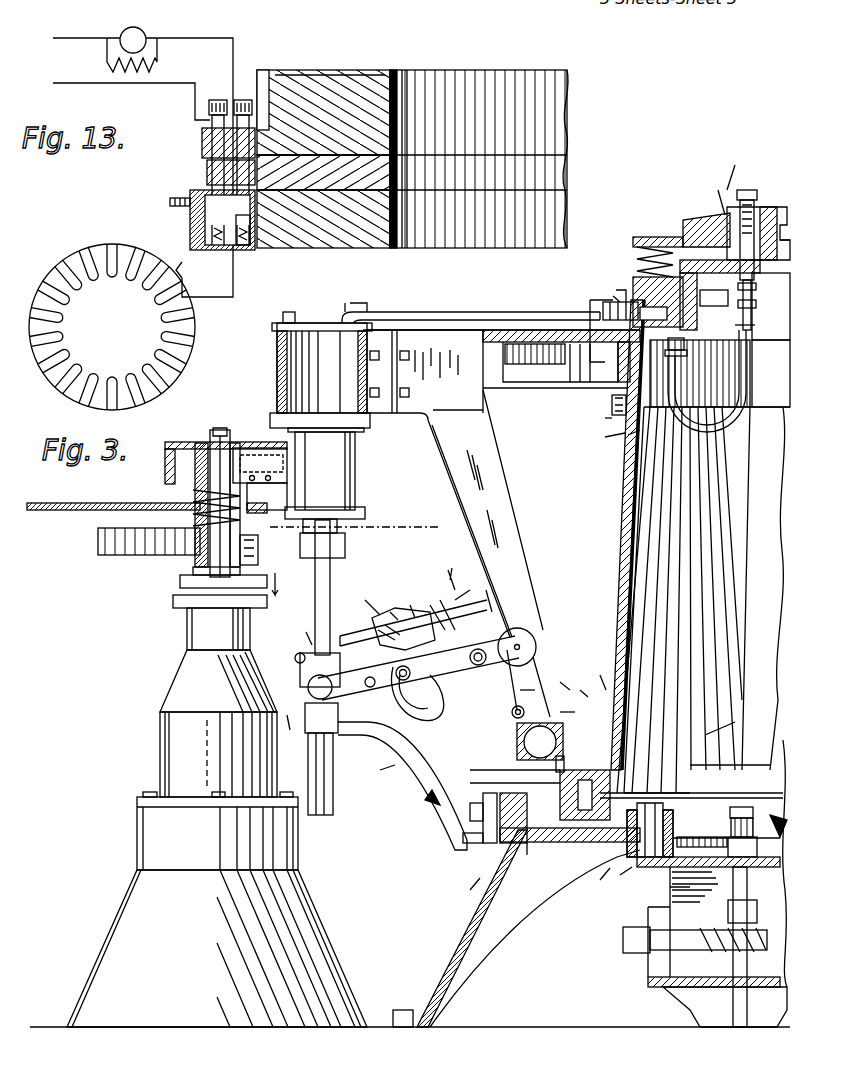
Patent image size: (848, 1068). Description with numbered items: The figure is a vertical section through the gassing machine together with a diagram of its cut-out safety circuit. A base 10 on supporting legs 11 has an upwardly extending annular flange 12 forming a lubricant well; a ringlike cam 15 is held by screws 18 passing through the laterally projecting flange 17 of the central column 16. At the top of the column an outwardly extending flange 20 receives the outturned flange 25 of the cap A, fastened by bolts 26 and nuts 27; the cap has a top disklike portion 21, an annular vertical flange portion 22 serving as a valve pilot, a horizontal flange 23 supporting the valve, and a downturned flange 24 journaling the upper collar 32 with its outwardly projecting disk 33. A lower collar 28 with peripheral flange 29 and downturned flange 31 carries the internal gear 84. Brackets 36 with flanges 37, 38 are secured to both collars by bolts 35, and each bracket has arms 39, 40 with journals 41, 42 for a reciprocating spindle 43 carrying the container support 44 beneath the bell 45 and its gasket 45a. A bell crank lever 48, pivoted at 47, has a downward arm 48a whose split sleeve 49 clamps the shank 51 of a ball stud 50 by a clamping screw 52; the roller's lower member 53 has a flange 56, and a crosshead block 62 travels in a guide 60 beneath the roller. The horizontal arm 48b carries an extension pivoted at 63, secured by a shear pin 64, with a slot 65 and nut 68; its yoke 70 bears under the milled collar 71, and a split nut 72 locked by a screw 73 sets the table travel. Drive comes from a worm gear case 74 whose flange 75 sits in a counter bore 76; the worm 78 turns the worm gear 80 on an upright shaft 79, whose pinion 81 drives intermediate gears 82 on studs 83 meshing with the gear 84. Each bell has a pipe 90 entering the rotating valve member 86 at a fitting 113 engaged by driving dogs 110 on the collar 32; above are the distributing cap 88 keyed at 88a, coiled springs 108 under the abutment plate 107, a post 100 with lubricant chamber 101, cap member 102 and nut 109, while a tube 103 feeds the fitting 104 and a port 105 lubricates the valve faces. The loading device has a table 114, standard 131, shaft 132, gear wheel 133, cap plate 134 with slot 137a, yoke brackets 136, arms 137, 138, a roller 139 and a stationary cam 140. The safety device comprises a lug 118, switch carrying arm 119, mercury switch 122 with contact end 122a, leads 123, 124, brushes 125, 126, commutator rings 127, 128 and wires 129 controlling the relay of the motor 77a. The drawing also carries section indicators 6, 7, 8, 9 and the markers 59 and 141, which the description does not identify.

In FIG. 13, the electric motor 77a is at (146, 36).
In FIG. 13, the wires 129 is at (197, 98).
In FIG. 13, the commutator ring 127 is at (208, 140).
In FIG. 13, the commutator ring 128 is at (211, 170).
In FIG. 13, the brush 125 is at (205, 252).
In FIG. 13, the brush 126 is at (245, 248).
In FIG. 13, the mercury contact switch 122 is at (127, 244).
In FIG. 3, the pipe 90 is at (438, 310).
In FIG. 3, the bell 45 is at (321, 370).
In FIG. 3, the bolts 35 is at (482, 365).
In FIG. 3, the flange 37 is at (474, 330).
In FIG. 3, the disk 33 is at (548, 330).
In FIG. 3, the driving dogs 110 is at (539, 364).
In FIG. 3, the collar 32 is at (560, 360).
In FIG. 3, the brackets 36 is at (498, 557).
In FIG. 3, the column 16 is at (618, 565).
In FIG. 3, the tube 103 is at (728, 425).
In FIG. 3, the cap A is at (771, 373).
In FIG. 3, the top disklike portion 21 is at (771, 306).
In FIG. 3, the distributing cap 88 is at (633, 290).
In FIG. 3, the coiled springs 108 is at (637, 252).
In FIG. 3, the key 88a is at (676, 238).
In FIG. 3, the annular vertical flange portion 22 is at (705, 245).
In FIG. 3, the cap member 102 is at (753, 180).
In FIG. 3, the post 100 is at (770, 210).
In FIG. 3, the chamber 101 is at (780, 259).
In FIG. 3, the spring abutment plate 107 is at (710, 195).
In FIG. 3, the nut 109 is at (729, 170).
In FIG. 3, the annular rotatable member 86 is at (707, 381).
In FIG. 3, the fitting 104 is at (700, 360).
In FIG. 3, the port 105 is at (758, 328).
In FIG. 3, the standard 131 is at (130, 728).
In FIG. 3, the fitting 113 is at (607, 293).
In FIG. 3, the section line 9 is at (609, 336).
In FIG. 3, the bolts 26 is at (618, 372).
In FIG. 3, the outturned flange 25 is at (612, 403).
In FIG. 3, the outwardly extending flange 20 is at (593, 419).
In FIG. 3, the nuts 27 is at (597, 436).
In FIG. 3, the downturned flange 24 is at (616, 436).
In FIG. 3, the arm 137 is at (322, 470).
In FIG. 3, the container support 44 is at (330, 496).
In FIG. 3, the gasket 45a is at (258, 425).
In FIG. 3, the shaft 132 is at (215, 450).
In FIG. 3, the cap plate 134 is at (165, 455).
In FIG. 3, the slot 137a is at (260, 465).
In FIG. 3, the supporting table 114 is at (135, 490).
In FIG. 3, the yoke bracket 136 is at (267, 498).
In FIG. 3, the spring 141 is at (193, 514).
In FIG. 3, the gear wheel 133 is at (98, 545).
In FIG. 3, the arm 138 is at (215, 580).
In FIG. 3, the roller 139 is at (250, 602).
In FIG. 3, the stationary cam 140 is at (195, 632).
In FIG. 3, the cam 15 is at (423, 615).
In FIG. 3, the journal 41 is at (288, 584).
In FIG. 3, the section line 8 is at (361, 589).
In FIG. 3, the arm 39 is at (352, 565).
In FIG. 3, the journal 42 is at (312, 725).
In FIG. 3, the reciprocating spindle 43 is at (333, 800).
In FIG. 3, the arm 40 is at (355, 742).
In FIG. 3, the lead 124 is at (371, 773).
In FIG. 3, the yoke 70 is at (314, 682).
In FIG. 3, the milled collar 71 is at (296, 656).
In FIG. 3, the screw 73 is at (300, 628).
In FIG. 3, the crosshead block 62 is at (378, 672).
In FIG. 3, the arm 48b is at (530, 605).
In FIG. 3, the pivot 47 is at (537, 640).
In FIG. 3, the pivot 63 is at (463, 657).
In FIG. 3, the nut 68 is at (414, 670).
In FIG. 3, the shear pin 64 is at (372, 690).
In FIG. 3, the slot 65 is at (420, 707).
In FIG. 3, the split nut 72 is at (389, 627).
In FIG. 3, the lead 123 is at (360, 601).
In FIG. 3, the end of mercury tube 122a is at (390, 609).
In FIG. 3, the switch carrying arm 119 is at (407, 603).
In FIG. 3, the lug 118 is at (448, 608).
In FIG. 3, the section line 6 is at (382, 652).
In FIG. 3, the bell crank lever 48 is at (536, 683).
In FIG. 3, the arm 48a is at (573, 678).
In FIG. 3, the split sleeve 49 is at (521, 683).
In FIG. 3, the pin 59 is at (580, 687).
In FIG. 3, the laterally projecting flange 17 is at (597, 675).
In FIG. 3, the clamping screw 52 is at (529, 704).
In FIG. 3, the shank 51 is at (574, 705).
In FIG. 3, the ball stud 50 is at (522, 756).
In FIG. 3, the lower member 53 is at (515, 747).
In FIG. 3, the horizontal flange 23 is at (668, 754).
In FIG. 3, the peripheral projecting flange 29 is at (729, 722).
In FIG. 3, the flange 56 is at (565, 779).
In FIG. 3, the flange 38 is at (480, 793).
In FIG. 3, the annular flange 12 is at (505, 843).
In FIG. 3, the section line 7 is at (603, 813).
In FIG. 3, the collar 28 is at (575, 843).
In FIG. 3, the downturned flange 31 is at (532, 857).
In FIG. 3, the studs 83 is at (660, 800).
In FIG. 3, the intermediate gears 82 is at (700, 835).
In FIG. 3, the pinion 81 is at (748, 807).
In FIG. 3, the flange 75 is at (650, 867).
In FIG. 3, the base 10 is at (595, 877).
In FIG. 3, the counter bore 76 is at (616, 877).
In FIG. 3, the worm gear case 74 is at (700, 895).
In FIG. 3, the upright shaft 79 is at (747, 895).
In FIG. 3, the worm gear 80 is at (757, 912).
In FIG. 3, the worm 78 is at (705, 955).
In FIG. 3, the supporting legs 11 is at (472, 928).
In FIG. 3, the internal gear 84 is at (535, 938).
In FIG. 3, the guide 60 is at (459, 890).
In FIG. 3, the screws 18 is at (458, 594).